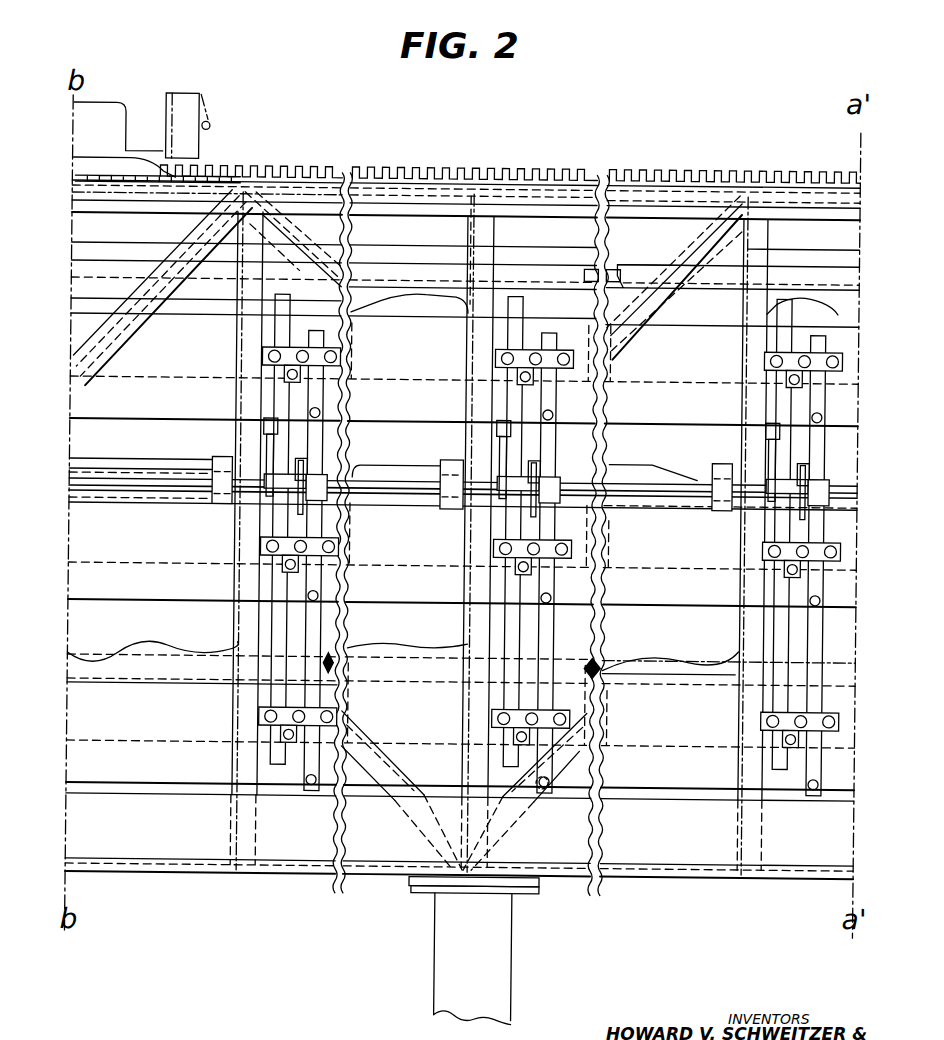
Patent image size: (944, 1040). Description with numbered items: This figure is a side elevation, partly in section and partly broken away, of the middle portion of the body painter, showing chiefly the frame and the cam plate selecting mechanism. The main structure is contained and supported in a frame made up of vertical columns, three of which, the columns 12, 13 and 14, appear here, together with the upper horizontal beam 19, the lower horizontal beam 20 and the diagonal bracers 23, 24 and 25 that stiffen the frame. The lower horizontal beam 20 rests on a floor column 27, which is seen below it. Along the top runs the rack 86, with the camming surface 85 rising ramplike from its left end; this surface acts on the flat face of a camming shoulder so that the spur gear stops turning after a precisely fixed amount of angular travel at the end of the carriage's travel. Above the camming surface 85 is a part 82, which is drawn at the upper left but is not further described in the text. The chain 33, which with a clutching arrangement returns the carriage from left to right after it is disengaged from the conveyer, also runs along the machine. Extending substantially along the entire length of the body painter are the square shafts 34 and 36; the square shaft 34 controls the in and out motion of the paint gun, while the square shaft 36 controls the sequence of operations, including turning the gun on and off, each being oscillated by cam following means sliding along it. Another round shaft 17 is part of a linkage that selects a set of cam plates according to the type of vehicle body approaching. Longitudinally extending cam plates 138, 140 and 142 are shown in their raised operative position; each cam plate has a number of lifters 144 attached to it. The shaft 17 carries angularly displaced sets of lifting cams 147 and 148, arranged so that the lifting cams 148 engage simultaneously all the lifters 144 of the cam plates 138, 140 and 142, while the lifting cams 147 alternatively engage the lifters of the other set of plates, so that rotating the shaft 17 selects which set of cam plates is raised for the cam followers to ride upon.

The column 12 is at (244, 626).
The column 13 is at (476, 615).
The column 14 is at (749, 611).
The round shaft 17 is at (373, 468).
The horizontal beam 19 is at (415, 208).
The lower horizontal beam 20 is at (318, 855).
The diagonal bracer 23 is at (126, 326).
The diagonal bracer 24 is at (300, 244).
The diagonal bracer 25 is at (700, 242).
The floor column 27 is at (522, 947).
The chain 33 is at (130, 182).
The square shaft 34 is at (599, 659).
The square shaft 36 is at (642, 256).
The arm 82 is at (199, 98).
The camming surface 85 is at (162, 159).
The rack 86 is at (515, 170).
The cam plate 138 is at (709, 660).
The cam plate 140 is at (700, 467).
The cam plate 142 is at (849, 309).
The lifter 144 is at (268, 422).
The lifting cam 147 is at (303, 476).
The lifting cam 148 is at (270, 444).